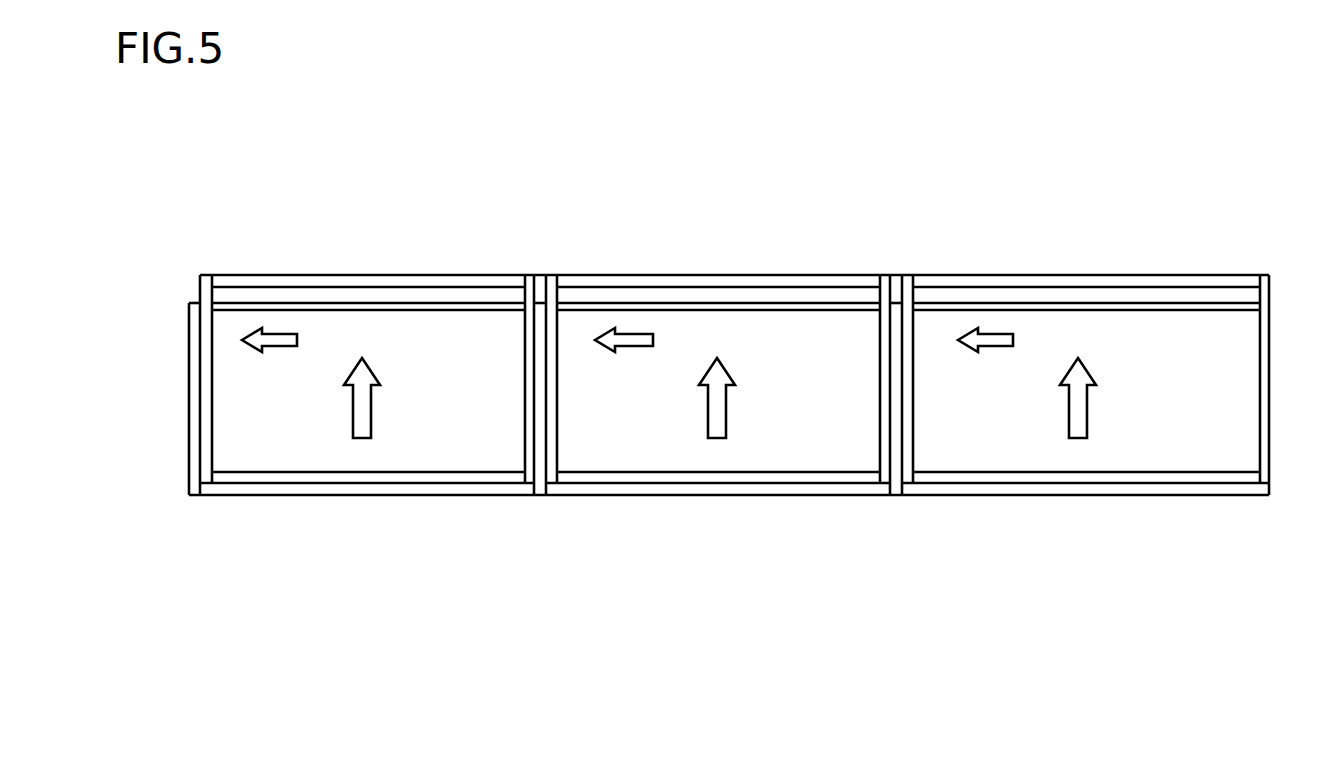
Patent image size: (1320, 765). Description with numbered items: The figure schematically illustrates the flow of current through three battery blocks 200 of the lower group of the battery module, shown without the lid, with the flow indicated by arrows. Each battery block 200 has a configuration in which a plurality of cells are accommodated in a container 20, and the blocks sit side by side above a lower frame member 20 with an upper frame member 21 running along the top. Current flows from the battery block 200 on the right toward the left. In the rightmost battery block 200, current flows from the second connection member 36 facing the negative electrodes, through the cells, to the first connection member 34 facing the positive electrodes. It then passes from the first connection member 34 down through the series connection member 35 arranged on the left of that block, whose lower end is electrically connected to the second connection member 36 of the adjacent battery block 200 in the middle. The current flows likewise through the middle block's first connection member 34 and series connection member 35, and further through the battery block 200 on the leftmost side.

The battery block 200 is at (420, 257).
The upper frame member 21 is at (498, 283).
The container 20 is at (1165, 487).
The first connection member 34 is at (298, 310).
The series connection member 35 is at (192, 397).
The second connection member 36 is at (373, 477).